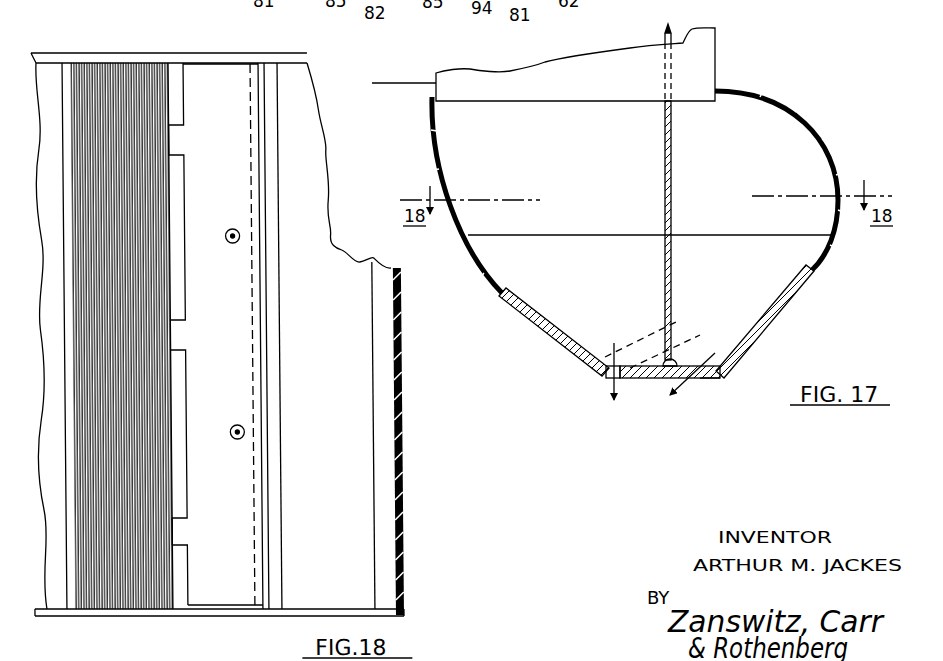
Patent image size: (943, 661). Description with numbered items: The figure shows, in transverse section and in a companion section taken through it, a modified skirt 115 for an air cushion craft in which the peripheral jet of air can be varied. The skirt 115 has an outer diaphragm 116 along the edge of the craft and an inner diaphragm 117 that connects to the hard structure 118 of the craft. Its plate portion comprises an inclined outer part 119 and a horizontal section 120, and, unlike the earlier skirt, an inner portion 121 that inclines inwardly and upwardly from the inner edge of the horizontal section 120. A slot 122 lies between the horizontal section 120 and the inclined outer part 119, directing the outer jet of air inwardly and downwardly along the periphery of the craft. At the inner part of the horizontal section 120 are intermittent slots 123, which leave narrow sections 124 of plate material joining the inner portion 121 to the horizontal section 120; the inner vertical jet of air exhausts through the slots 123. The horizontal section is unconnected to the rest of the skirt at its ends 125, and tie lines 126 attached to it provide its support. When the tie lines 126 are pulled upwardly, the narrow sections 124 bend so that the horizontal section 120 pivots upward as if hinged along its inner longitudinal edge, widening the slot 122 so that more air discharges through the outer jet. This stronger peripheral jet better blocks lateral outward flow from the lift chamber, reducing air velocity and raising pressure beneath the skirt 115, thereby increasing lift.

In FIG. 18, the skirt 115 is at (58, 50).
In FIG. 17, the skirt 115 is at (423, 145).
In FIG. 18, the outer diaphragm 116 is at (402, 443).
In FIG. 17, the outer diaphragm 116 is at (807, 125).
In FIG. 18, the inner diaphragm 117 is at (53, 603).
In FIG. 17, the inner diaphragm 117 is at (470, 256).
In FIG. 17, the hard structure 118 is at (553, 95).
In FIG. 18, the inclined outer part 119 is at (341, 257).
In FIG. 17, the inclined outer part 119 is at (775, 317).
In FIG. 18, the horizontal section 120 is at (225, 68).
In FIG. 17, the horizontal section 120 is at (644, 346).
In FIG. 18, the inner portion 121 is at (103, 67).
In FIG. 17, the inner portion 121 is at (535, 325).
In FIG. 18, the slot 122 is at (262, 409).
In FIG. 17, the slot 122 is at (700, 378).
In FIG. 18, the intermittent slots 123 is at (175, 90).
In FIG. 17, the intermittent slots 123 is at (607, 378).
In FIG. 18, the narrow sections 124 is at (177, 335).
In FIG. 18, the ends 125 is at (193, 63).
In FIG. 18, the tie lines 126 is at (229, 228).
In FIG. 17, the tie lines 126 is at (672, 183).